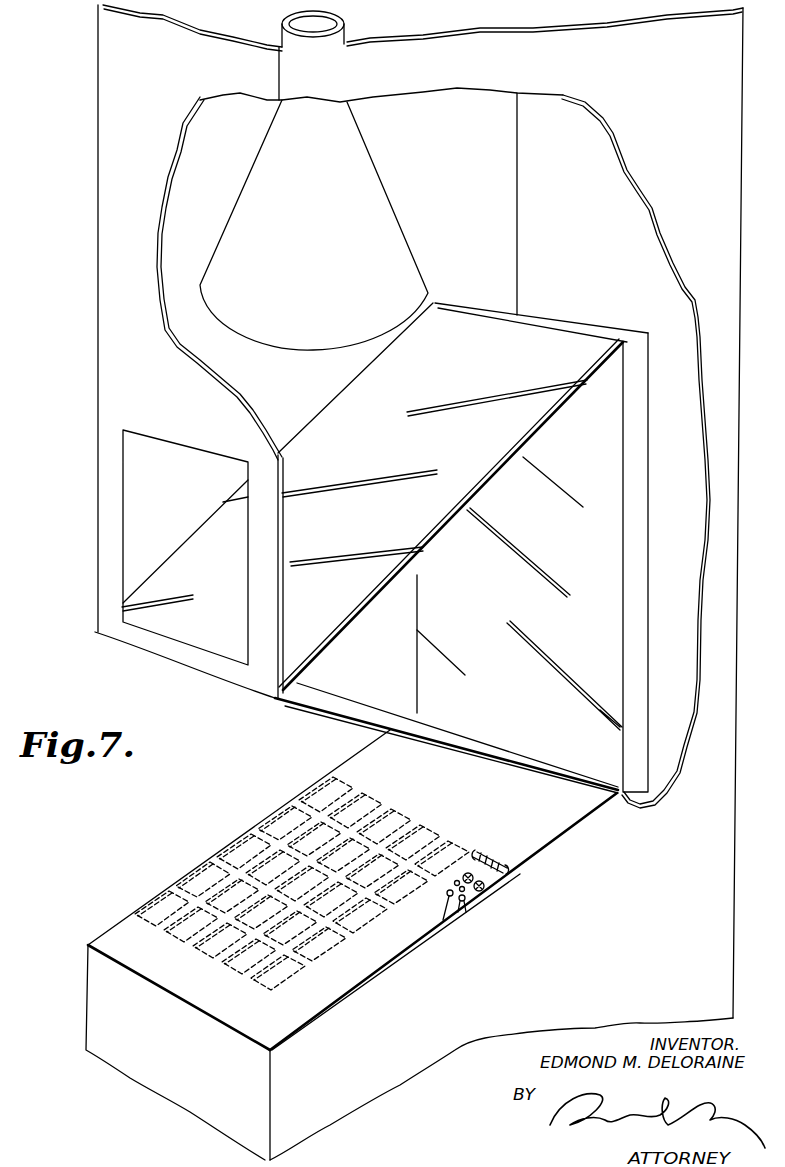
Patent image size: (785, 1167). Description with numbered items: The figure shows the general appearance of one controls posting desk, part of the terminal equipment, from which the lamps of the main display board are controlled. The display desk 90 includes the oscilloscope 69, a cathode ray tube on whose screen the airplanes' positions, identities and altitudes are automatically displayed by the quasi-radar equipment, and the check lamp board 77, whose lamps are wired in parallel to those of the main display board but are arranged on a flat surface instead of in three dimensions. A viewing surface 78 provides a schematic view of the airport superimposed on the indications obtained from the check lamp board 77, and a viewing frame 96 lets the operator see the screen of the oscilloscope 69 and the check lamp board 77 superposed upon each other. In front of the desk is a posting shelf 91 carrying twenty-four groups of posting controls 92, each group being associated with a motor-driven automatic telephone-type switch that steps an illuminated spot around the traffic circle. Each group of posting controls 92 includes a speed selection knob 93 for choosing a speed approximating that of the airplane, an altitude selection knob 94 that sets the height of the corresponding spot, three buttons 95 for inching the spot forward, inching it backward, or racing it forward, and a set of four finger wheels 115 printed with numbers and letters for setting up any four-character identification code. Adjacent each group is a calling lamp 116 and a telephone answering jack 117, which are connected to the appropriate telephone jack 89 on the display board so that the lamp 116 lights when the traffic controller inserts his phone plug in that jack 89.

The oscilloscope 69 is at (314, 225).
The viewing surface 78 is at (473, 488).
The check lamp board 77 is at (448, 625).
The viewing frame 96 is at (123, 498).
The posting shelf 91 is at (135, 920).
The groups of posting controls 92 is at (280, 828).
The display desk 90 is at (431, 1024).
The finger wheels 115 is at (507, 870).
The speed selection knob 93 is at (473, 880).
The altitude selection knob 94 is at (476, 891).
The buttons 95 is at (462, 892).
The telephone answering jack 117 is at (464, 903).
The calling lamp 116 is at (449, 896).
The telephone jacks 89 is at (337, 1012).